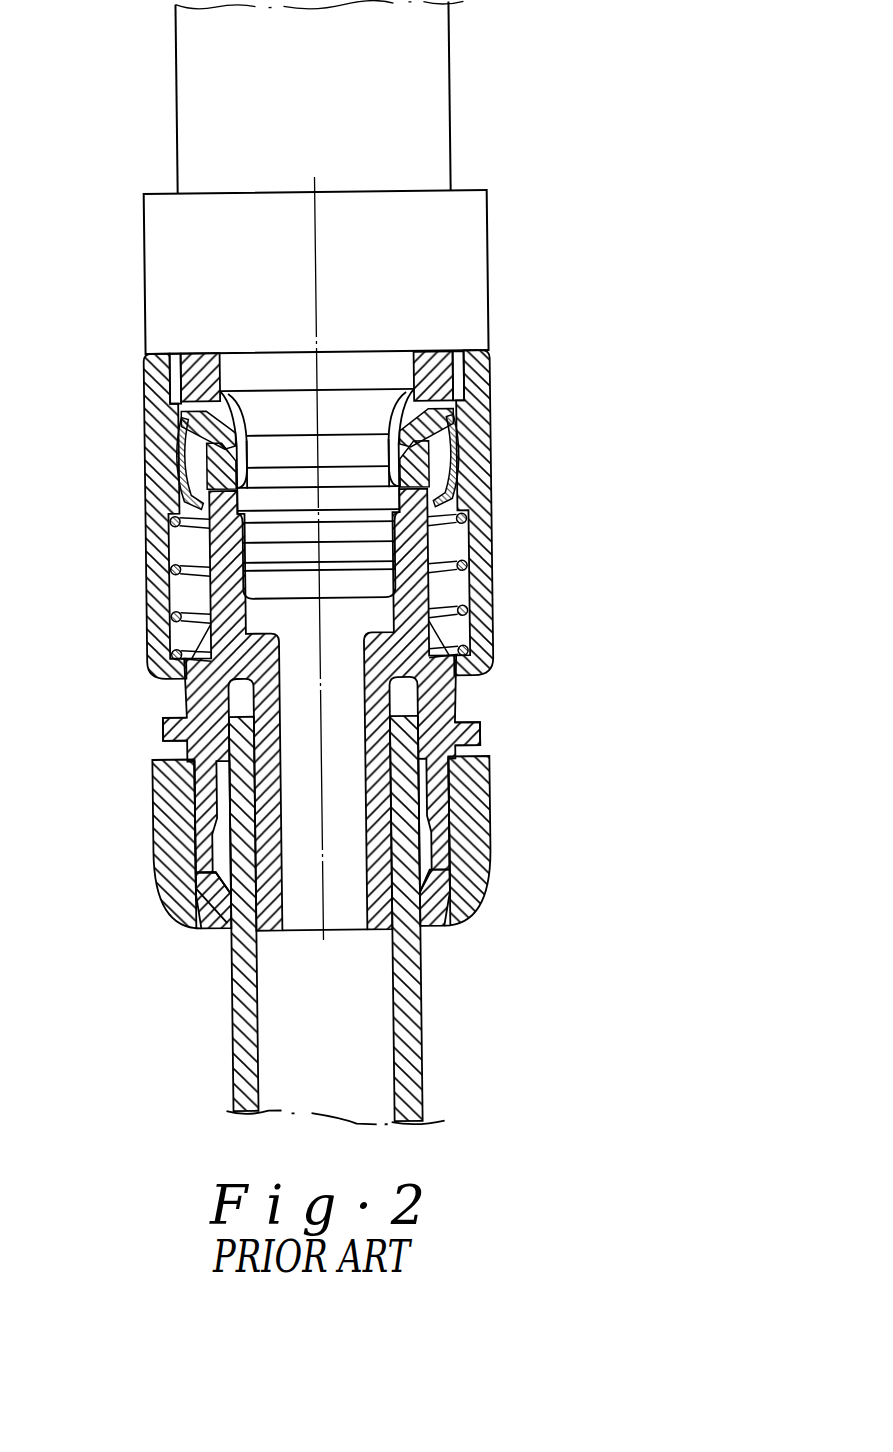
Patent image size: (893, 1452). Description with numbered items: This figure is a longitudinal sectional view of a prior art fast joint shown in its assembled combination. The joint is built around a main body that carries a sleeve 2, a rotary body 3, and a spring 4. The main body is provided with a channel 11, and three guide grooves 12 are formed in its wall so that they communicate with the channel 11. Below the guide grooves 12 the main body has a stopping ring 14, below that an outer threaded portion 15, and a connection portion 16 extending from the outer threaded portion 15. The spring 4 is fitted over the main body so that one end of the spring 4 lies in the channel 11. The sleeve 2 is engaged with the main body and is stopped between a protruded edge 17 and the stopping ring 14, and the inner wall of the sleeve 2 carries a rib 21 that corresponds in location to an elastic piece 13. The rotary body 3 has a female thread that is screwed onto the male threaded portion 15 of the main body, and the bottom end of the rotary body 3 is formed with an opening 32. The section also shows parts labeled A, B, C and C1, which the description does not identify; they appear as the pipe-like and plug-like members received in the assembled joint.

The sleeve 2 is at (480, 625).
The rotary body 3 is at (473, 880).
The spring 4 is at (454, 649).
The channel 11 is at (191, 435).
The guide grooves 12 is at (198, 458).
The elastic piece 13 is at (194, 482).
The stopping ring 14 is at (463, 734).
The outer threaded portion 15 is at (474, 815).
The connection portion 16 is at (451, 929).
The protruded edge 17 is at (152, 361).
The rib 21 is at (466, 437).
The opening 32 is at (228, 920).
The pipe A is at (404, 1073).
The pipe B is at (437, 123).
The plug C is at (465, 299).
The plug engaging portion C1 is at (416, 473).